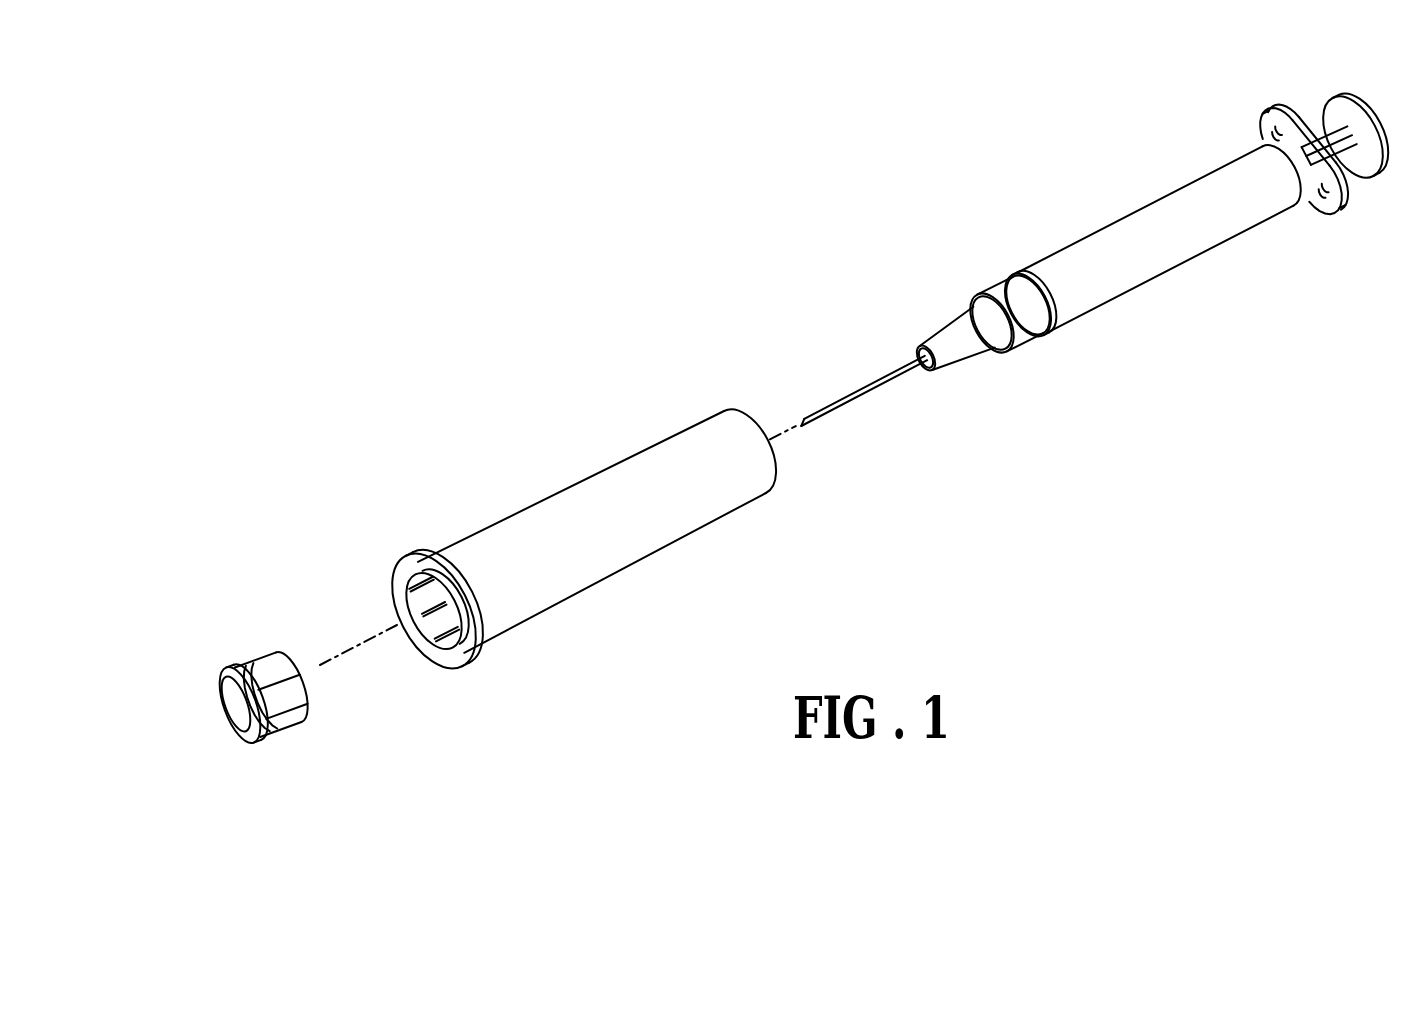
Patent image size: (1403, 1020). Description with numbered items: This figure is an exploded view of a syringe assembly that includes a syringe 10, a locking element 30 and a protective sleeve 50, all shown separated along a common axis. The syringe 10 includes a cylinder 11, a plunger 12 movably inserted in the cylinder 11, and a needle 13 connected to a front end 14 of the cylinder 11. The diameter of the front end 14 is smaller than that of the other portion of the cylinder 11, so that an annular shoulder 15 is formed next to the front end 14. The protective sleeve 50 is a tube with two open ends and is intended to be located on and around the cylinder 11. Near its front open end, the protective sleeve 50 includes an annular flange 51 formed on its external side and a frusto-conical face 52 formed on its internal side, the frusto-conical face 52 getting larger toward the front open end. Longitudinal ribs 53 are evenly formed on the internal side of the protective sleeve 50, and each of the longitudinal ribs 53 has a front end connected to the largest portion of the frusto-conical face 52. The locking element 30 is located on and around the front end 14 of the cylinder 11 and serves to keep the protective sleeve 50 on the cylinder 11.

The syringe 10 is at (1085, 192).
The cylinder 11 is at (1150, 255).
The plunger 12 is at (1353, 147).
The needle 13 is at (872, 387).
The front end 14 is at (1017, 305).
The annular shoulder 15 is at (1055, 308).
The locking element 30 is at (238, 647).
The protective sleeve 50 is at (590, 497).
The annular flange 51 is at (415, 562).
The frusto-conical face 52 is at (417, 597).
The longitudinal ribs 53 is at (442, 617).